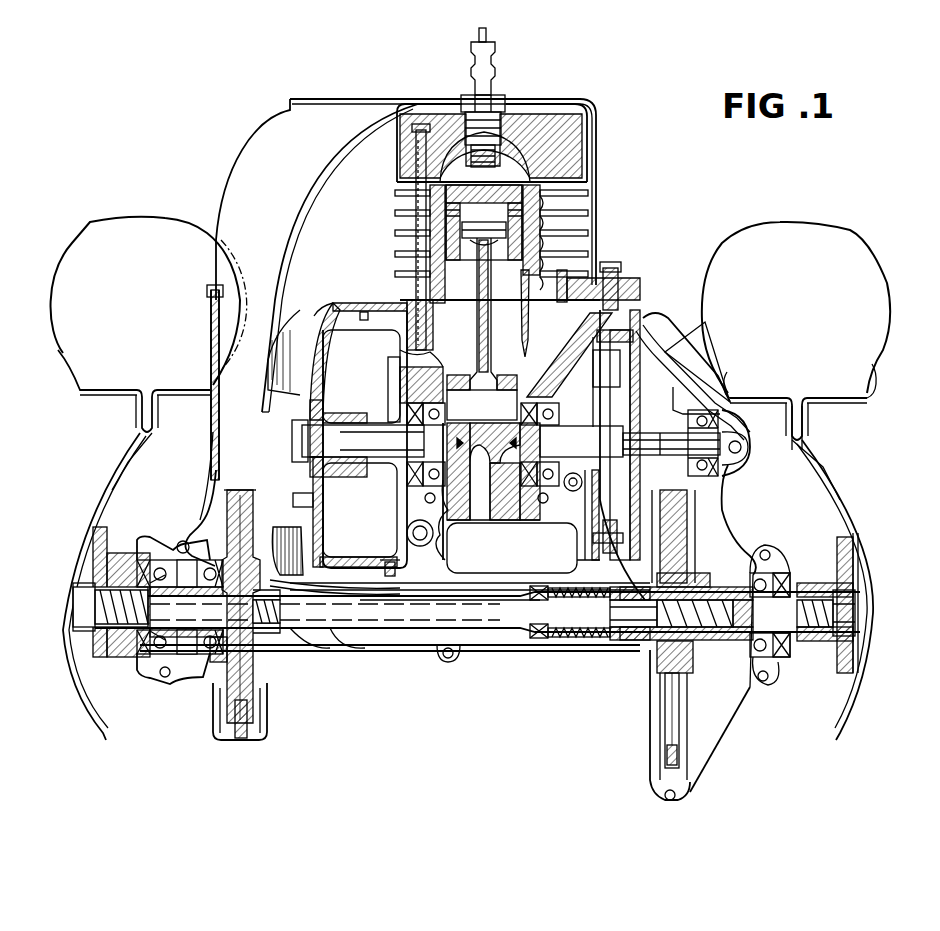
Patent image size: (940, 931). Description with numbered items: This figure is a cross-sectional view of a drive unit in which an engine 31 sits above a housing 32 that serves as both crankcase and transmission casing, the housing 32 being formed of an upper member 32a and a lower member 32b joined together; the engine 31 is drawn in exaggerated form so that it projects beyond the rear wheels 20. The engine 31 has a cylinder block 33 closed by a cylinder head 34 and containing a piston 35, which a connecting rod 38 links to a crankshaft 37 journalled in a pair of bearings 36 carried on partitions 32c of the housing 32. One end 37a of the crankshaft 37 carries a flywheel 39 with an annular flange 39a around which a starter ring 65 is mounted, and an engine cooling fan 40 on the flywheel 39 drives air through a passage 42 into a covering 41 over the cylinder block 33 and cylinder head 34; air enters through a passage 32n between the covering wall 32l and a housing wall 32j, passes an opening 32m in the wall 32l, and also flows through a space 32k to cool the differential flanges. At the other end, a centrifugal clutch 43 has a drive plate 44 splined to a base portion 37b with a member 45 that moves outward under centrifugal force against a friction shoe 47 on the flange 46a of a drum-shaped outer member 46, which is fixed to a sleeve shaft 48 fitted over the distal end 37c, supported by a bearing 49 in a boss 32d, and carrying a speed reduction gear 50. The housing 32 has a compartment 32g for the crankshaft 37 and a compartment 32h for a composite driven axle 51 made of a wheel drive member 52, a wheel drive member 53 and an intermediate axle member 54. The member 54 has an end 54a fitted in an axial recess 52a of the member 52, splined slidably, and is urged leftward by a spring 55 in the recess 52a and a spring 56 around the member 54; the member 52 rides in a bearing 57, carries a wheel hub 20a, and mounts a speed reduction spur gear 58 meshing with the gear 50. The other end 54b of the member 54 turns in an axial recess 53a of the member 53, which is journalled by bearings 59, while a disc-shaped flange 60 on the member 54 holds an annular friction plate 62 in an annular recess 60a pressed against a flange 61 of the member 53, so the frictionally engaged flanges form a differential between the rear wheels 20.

The rear wheel 20 is at (146, 218).
The wheel hub 20a is at (90, 505).
The engine 31 is at (565, 150).
The housing 32 is at (738, 494).
The upper member 32a is at (700, 380).
The lower member 32b is at (735, 720).
The partition 32c is at (410, 382).
The boss 32d is at (745, 414).
The compartment 32g is at (462, 530).
The compartment 32h is at (455, 650).
The housing wall 32j is at (210, 490).
The space 32k is at (210, 498).
The wall 32l is at (258, 412).
The opening 32m is at (264, 410).
The passage 32n is at (212, 286).
The cylinder block 33 is at (565, 200).
The cylinder head 34 is at (525, 150).
The piston 35 is at (416, 203).
The bearing 36 is at (415, 445).
The crankshaft 37 is at (435, 612).
The crankshaft end 37a is at (340, 440).
The base portion 37b is at (640, 400).
The distal end 37c is at (742, 458).
The connecting rod 38 is at (488, 318).
The flywheel 39 is at (365, 585).
The annular flange 39a is at (350, 310).
The engine cooling fan 40 is at (292, 320).
The covering 41 is at (355, 126).
The passage 42 is at (255, 282).
The centrifugal clutch 43 is at (670, 372).
The drive plate 44 is at (580, 515).
The member 45 is at (608, 520).
The outer member 46 is at (636, 425).
The flange 46a is at (680, 548).
The friction shoe 47 is at (615, 300).
The sleeve shaft 48 is at (636, 462).
The bearing 49 is at (730, 412).
The speed reduction gear 50 is at (708, 412).
The composite driven axle 51 is at (500, 618).
The wheel drive member 52 is at (725, 640).
The axial recess 52a is at (775, 553).
The wheel drive member 53 is at (100, 610).
The axial recess 53a is at (215, 660).
The intermediate axle member 54 is at (432, 632).
The bearing sleeve 54a is at (618, 640).
The end 54b is at (215, 640).
The spring 55 is at (635, 632).
The spring 56 is at (580, 636).
The bearing 57 is at (775, 670).
The speed reduction spur gear 58 is at (690, 740).
The bearing 59 is at (158, 575).
The disc-shaped flange 60 is at (262, 735).
The annular recess 60a is at (240, 488).
The disc-shaped flange 61 is at (236, 718).
The annular friction plate 62 is at (240, 742).
The starter ring 65 is at (390, 580).